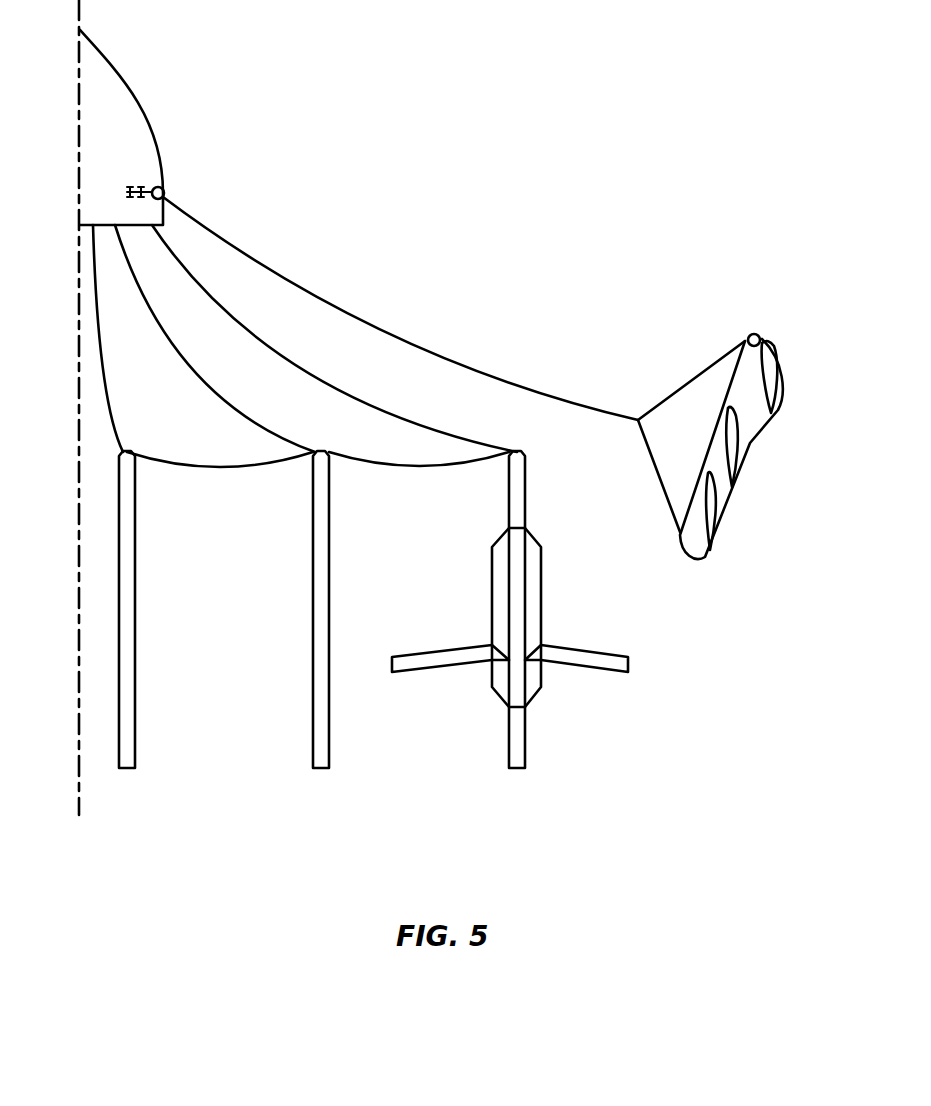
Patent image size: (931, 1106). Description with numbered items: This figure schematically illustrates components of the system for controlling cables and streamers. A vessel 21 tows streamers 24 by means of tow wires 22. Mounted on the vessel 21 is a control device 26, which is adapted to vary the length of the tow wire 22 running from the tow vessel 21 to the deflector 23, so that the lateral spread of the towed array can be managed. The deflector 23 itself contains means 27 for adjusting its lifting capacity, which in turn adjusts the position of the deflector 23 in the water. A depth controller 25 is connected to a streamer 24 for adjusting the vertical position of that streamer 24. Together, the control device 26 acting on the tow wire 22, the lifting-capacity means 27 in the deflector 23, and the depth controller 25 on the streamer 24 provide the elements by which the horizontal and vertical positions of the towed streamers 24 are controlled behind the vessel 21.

The vessel 21 is at (128, 122).
The tow wire 22 is at (358, 328).
The deflector 23 is at (752, 460).
The streamer 24 is at (313, 629).
The depth controller 25 is at (492, 603).
The control device 26 is at (149, 190).
The means for adjusting the lifting capacity 27 is at (752, 333).